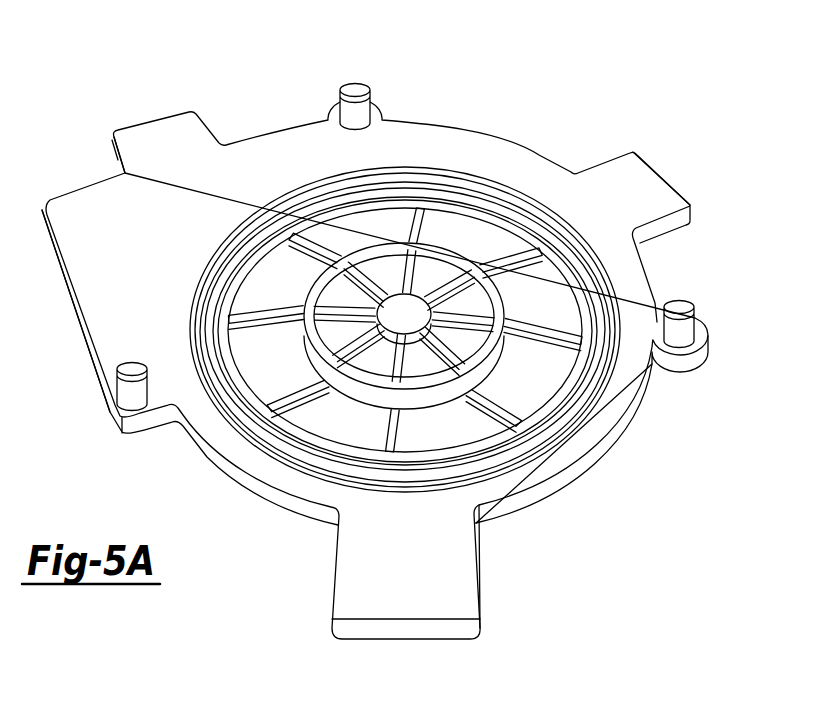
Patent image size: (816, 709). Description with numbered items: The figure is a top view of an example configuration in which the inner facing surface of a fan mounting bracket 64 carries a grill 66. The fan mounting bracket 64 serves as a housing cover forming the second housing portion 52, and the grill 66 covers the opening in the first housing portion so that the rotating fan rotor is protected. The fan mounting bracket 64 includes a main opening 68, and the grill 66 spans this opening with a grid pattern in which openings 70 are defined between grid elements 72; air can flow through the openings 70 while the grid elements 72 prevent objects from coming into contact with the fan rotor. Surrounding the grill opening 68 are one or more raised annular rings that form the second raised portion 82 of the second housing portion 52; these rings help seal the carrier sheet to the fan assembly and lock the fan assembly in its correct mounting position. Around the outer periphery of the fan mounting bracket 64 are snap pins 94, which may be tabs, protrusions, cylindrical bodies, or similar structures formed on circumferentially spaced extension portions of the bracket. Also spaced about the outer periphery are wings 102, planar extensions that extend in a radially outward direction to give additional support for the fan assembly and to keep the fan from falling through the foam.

The second housing portion 52 is at (540, 130).
The fan mounting bracket 64 is at (277, 160).
The grill 66 is at (497, 357).
The main opening 68 is at (343, 442).
The openings 70 is at (287, 267).
The grid elements 72 is at (285, 378).
The second raised portion 82 is at (252, 409).
The snap pins 94 is at (352, 82).
The wings 102 is at (161, 143).